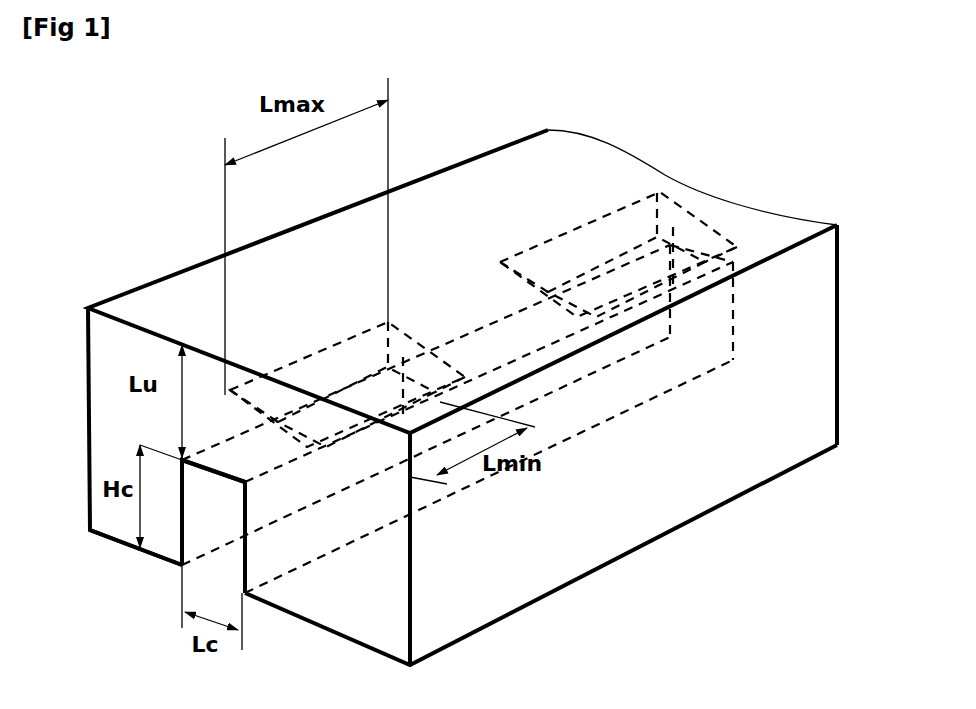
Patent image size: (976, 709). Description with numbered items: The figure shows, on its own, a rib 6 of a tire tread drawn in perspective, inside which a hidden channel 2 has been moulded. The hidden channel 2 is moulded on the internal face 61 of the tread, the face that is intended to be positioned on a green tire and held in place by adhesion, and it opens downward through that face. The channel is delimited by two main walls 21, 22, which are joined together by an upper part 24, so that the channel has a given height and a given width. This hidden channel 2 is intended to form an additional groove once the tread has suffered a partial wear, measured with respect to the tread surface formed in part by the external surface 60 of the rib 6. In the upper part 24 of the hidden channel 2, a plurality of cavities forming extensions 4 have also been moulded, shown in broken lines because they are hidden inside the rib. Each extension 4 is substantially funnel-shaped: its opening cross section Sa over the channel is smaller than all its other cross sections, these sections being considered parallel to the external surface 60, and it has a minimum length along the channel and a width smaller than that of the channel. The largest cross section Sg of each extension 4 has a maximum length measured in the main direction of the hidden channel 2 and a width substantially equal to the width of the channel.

The hidden channel 2 is at (213, 573).
The extensions 4 is at (325, 375).
The rib 6 is at (140, 247).
The main wall 21 is at (163, 553).
The main wall 22 is at (252, 578).
The upper part 24 is at (227, 458).
The external surface 60 is at (416, 245).
The internal face 61 is at (370, 652).
The opening cross section Sa is at (328, 417).
The largest cross section Sg is at (305, 368).